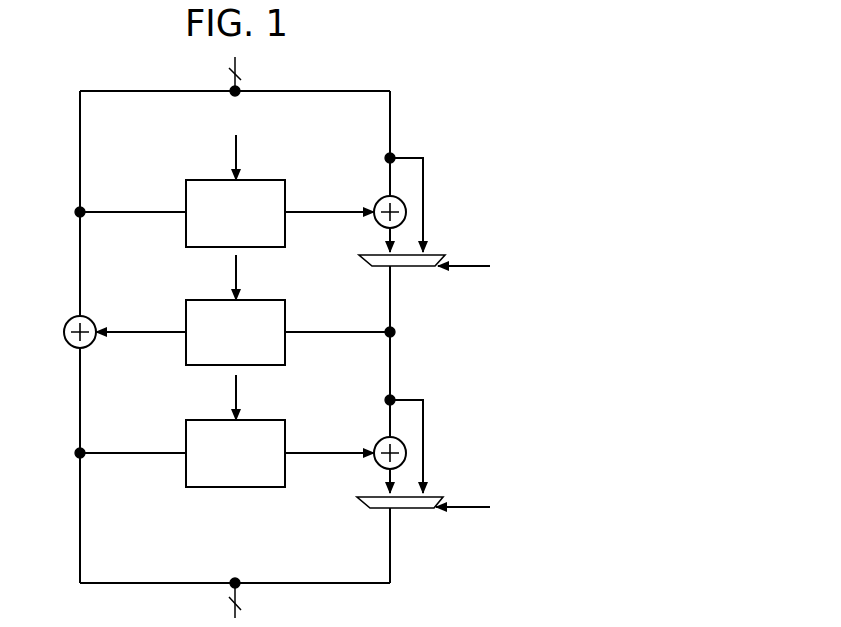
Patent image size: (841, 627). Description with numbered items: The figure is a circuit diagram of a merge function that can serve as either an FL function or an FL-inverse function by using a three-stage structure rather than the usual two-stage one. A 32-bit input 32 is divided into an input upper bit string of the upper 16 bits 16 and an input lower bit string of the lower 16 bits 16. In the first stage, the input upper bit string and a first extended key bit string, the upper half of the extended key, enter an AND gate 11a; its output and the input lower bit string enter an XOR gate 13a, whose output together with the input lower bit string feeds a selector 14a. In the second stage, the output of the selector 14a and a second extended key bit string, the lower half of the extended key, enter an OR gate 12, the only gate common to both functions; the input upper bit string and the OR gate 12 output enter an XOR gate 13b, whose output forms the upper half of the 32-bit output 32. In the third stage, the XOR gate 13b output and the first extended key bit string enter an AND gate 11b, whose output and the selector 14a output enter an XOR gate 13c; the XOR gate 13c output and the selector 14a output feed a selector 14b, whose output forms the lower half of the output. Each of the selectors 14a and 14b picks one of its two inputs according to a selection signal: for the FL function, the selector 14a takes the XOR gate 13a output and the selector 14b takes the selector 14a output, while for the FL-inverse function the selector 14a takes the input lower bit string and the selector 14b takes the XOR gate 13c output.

The 32-bit input/output 32 is at (235, 337).
The 16-bit string 16 is at (85, 155).
The AND gate 11a is at (285, 177).
The AND gate 11b is at (285, 417).
The OR gate 12 is at (285, 293).
The XOR gate 13a is at (412, 198).
The XOR gate 13b is at (72, 313).
The XOR gate 13c is at (412, 437).
The selector 14a is at (403, 270).
The selector 14b is at (405, 510).